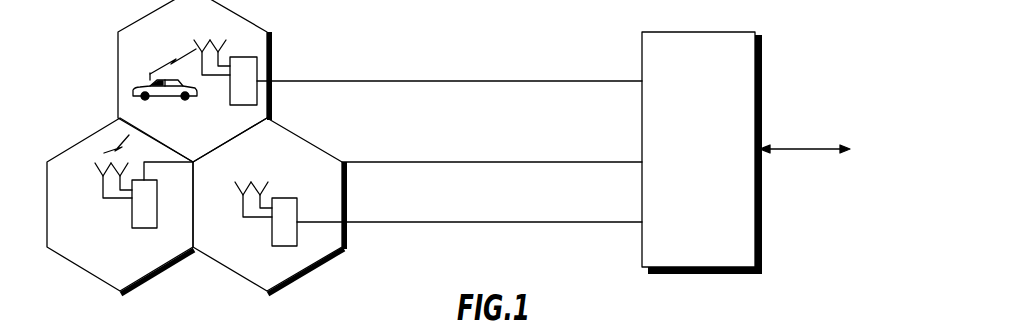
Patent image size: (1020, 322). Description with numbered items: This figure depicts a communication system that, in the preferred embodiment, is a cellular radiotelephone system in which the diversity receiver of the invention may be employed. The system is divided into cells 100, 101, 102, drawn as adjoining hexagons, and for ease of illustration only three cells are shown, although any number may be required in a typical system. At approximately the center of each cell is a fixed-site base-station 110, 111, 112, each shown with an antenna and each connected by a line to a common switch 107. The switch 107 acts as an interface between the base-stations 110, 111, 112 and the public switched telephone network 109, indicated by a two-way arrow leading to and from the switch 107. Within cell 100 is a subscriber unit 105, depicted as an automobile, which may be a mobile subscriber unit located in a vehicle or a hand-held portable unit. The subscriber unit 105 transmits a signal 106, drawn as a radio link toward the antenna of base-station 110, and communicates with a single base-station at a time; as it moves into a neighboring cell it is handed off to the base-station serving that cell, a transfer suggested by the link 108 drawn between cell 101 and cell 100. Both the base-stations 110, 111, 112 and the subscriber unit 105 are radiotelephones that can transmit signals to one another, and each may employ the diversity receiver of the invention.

The cell 100 is at (232, 16).
The cell 101 is at (82, 150).
The cell 102 is at (320, 268).
The subscriber unit 105 is at (188, 99).
The signal 106 is at (193, 50).
The switch 107 is at (700, 31).
The handoff radio link 108 is at (124, 135).
The public switched telephone network (PSTN) 109 is at (809, 123).
The base-station 110 is at (258, 62).
The base-station 111 is at (158, 210).
The base-station 112 is at (272, 233).